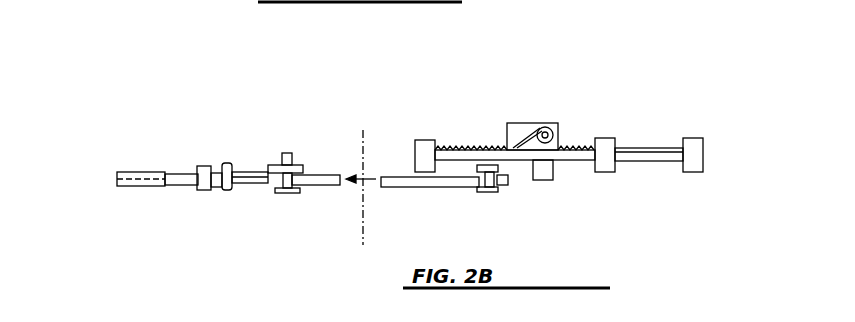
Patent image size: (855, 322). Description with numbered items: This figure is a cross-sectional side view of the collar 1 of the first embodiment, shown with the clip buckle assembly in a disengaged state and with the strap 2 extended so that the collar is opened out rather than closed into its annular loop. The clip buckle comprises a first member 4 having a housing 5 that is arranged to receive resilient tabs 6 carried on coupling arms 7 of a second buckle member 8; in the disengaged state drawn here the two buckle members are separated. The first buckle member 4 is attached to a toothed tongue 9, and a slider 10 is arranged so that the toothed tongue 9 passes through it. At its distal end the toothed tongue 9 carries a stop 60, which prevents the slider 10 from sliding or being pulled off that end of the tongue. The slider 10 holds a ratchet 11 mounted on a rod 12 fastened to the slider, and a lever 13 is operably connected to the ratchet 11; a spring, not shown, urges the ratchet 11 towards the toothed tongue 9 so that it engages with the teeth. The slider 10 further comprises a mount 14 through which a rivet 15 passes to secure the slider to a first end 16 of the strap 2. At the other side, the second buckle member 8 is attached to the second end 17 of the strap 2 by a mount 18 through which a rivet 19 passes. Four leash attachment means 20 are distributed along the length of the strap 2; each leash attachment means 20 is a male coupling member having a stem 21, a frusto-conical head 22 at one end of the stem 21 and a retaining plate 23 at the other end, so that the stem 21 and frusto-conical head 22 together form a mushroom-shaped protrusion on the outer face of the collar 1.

The collar 1 is at (472, 108).
The strap 2 is at (245, 192).
The first member 4 is at (693, 138).
The housing 5 is at (647, 138).
The resilient tabs 6 is at (134, 188).
The coupling arms 7 is at (177, 192).
The second buckle member 8 is at (203, 165).
The toothed tongue 9 is at (557, 163).
The slider 10 is at (522, 123).
The ratchet 11 is at (538, 180).
The rod 12 is at (545, 130).
The lever 13 is at (563, 133).
The mount 14 is at (505, 186).
The rivet 15 is at (485, 192).
The first end 16 is at (440, 187).
The second end 17 is at (259, 197).
The mount 18 is at (217, 165).
The rivet 19 is at (241, 165).
The leash attachment means 20 is at (292, 198).
The stem 21 is at (313, 165).
The frusto-conical head 22 is at (282, 163).
The retaining plate 23 is at (297, 192).
The stop 60 is at (427, 138).